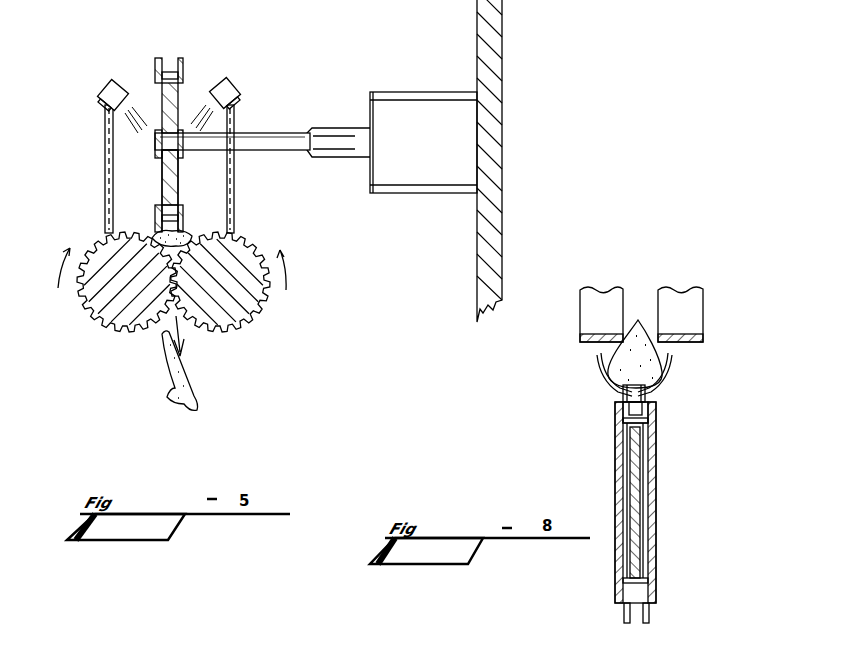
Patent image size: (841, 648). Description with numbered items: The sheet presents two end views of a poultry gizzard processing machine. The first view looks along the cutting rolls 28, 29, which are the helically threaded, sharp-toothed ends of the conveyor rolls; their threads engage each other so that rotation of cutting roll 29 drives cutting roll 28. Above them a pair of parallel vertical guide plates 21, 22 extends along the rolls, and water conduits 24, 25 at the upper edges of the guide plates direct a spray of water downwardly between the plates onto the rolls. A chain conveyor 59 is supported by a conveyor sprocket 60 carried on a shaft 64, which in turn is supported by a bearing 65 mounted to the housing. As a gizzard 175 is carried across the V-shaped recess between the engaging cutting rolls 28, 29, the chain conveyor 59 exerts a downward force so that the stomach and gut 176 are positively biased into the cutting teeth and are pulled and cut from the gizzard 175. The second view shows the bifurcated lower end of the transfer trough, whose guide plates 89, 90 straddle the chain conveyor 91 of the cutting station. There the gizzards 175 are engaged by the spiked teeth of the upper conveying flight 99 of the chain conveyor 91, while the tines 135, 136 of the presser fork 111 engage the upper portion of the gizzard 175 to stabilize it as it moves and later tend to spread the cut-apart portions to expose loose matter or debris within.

In FIG. 5, the vertical guide plate 21 is at (105, 181).
In FIG. 5, the vertical guide plate 22 is at (236, 208).
In FIG. 5, the water conduit 24 is at (108, 84).
In FIG. 5, the water conduit 25 is at (230, 90).
In FIG. 5, the cutting roll 28 is at (90, 305).
In FIG. 5, the cutting roll 29 is at (256, 306).
In FIG. 5, the chain conveyor 59 is at (186, 66).
In FIG. 5, the conveyor sprocket 60 is at (178, 180).
In FIG. 5, the shaft 64 is at (281, 143).
In FIG. 5, the bearing 65 is at (402, 108).
In FIG. 5, the gizzard 175 is at (160, 234).
In FIG. 5, the stomach and gut 176 is at (183, 394).
In FIG. 8, the stomach and gut 176 is at (622, 366).
In FIG. 8, the guide plate 89 is at (600, 362).
In FIG. 8, the guide plate 90 is at (668, 362).
In FIG. 8, the chain conveyor 91 is at (681, 597).
In FIG. 8, the upper conveying flight 99 is at (652, 397).
In FIG. 8, the presser fork 111 is at (699, 279).
In FIG. 8, the tine 135 is at (598, 302).
In FIG. 8, the tine 136 is at (690, 319).